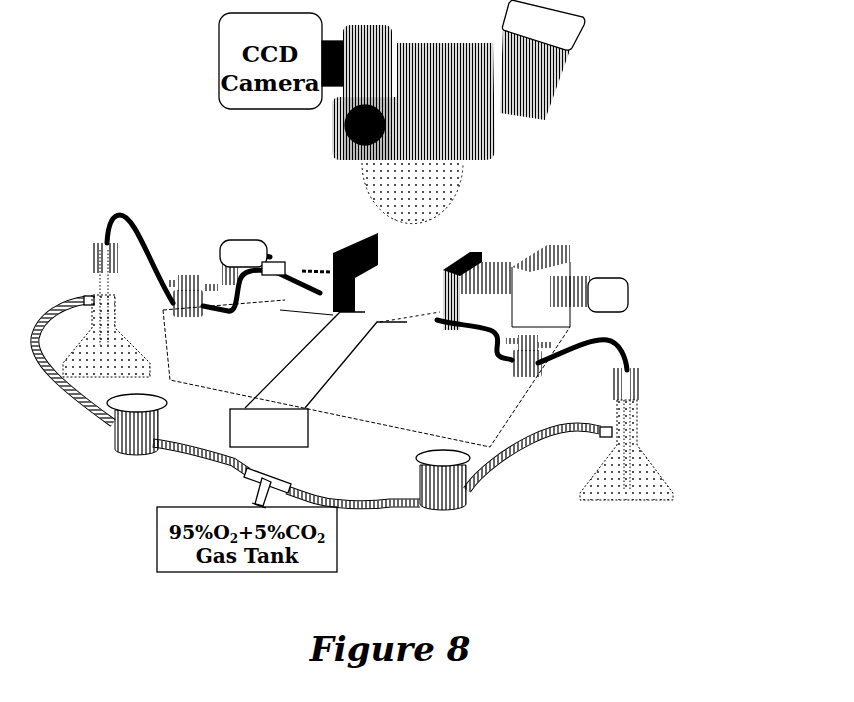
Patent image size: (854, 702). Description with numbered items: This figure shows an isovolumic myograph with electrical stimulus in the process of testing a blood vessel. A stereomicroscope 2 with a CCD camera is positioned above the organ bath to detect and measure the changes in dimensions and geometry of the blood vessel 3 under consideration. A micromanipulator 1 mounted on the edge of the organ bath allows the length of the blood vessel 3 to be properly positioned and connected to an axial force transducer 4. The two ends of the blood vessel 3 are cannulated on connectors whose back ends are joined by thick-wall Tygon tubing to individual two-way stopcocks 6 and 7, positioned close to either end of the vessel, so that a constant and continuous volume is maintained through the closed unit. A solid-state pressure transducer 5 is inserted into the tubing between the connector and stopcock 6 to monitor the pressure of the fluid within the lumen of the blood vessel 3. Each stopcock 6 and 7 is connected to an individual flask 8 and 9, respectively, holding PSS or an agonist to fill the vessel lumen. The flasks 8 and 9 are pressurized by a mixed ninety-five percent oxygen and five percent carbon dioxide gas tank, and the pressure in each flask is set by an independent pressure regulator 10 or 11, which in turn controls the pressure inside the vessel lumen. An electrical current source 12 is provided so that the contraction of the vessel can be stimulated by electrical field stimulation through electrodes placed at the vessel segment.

The micromanipulator 1 is at (618, 240).
The stereomicroscope 2 is at (551, 160).
The blood vessel 3 is at (433, 267).
The axial force transducer 4 is at (308, 222).
The solid-state pressure transducer 5 is at (218, 212).
The stopcock 6 is at (172, 252).
The stopcock 7 is at (683, 305).
The flask 8 is at (66, 235).
The flask 9 is at (688, 400).
The pressure regulator 10 is at (78, 430).
The pressure regulator 11 is at (506, 491).
The electrical current source 12 is at (338, 438).